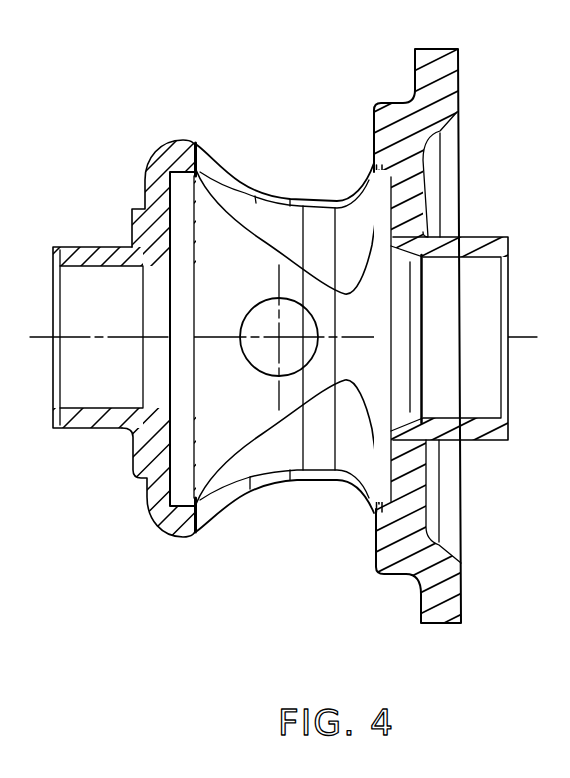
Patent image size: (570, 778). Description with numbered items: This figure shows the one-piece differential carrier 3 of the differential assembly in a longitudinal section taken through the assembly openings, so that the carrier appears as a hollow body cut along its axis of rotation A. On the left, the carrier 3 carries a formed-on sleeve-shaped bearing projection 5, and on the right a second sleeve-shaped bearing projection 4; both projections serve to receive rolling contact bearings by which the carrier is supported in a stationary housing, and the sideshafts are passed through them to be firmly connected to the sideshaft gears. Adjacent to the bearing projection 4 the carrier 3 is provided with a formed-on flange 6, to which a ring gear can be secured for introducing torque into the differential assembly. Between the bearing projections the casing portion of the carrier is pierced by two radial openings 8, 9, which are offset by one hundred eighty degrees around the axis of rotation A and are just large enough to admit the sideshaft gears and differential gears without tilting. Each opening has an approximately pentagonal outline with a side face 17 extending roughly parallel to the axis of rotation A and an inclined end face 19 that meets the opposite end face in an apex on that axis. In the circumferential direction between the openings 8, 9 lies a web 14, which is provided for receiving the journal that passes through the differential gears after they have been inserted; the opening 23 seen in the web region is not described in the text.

The differential carrier 3 is at (165, 152).
The sleeve-shaped bearing projection 4 is at (480, 243).
The sleeve-shaped bearing projection 5 is at (88, 253).
The flange 6 is at (457, 69).
The radial opening 8 is at (260, 191).
The radial opening 9 is at (278, 487).
The web 14 is at (250, 278).
The side face 17 is at (317, 202).
The end face 19 is at (210, 168).
The opening 23 is at (258, 356).
The axis of rotation A is at (525, 333).